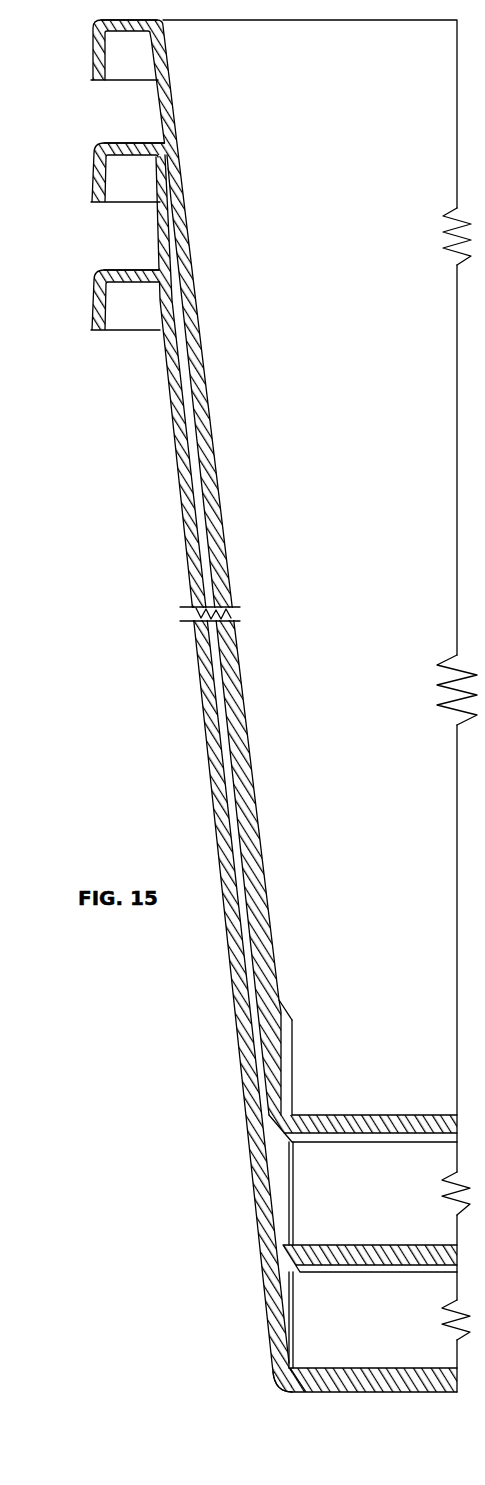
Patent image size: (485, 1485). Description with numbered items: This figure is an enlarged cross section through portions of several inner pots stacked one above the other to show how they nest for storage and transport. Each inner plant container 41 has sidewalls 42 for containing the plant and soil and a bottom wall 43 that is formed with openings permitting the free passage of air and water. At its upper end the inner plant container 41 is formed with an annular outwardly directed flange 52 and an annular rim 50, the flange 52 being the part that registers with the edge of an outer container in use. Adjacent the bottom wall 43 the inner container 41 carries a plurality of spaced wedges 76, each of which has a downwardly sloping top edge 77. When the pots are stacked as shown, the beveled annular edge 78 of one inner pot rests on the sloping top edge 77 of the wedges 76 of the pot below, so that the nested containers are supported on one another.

The plant container 41 is at (156, 108).
The sidewalls 42 is at (178, 118).
The bottom wall 43 is at (378, 1117).
The annular rim 50 is at (102, 54).
The annular outwardly directed flange 52 is at (128, 18).
The spaced wedges 76 is at (294, 1065).
The downwardly sloping top edge 77 is at (279, 1014).
The beveled annular edge 78 is at (281, 1392).